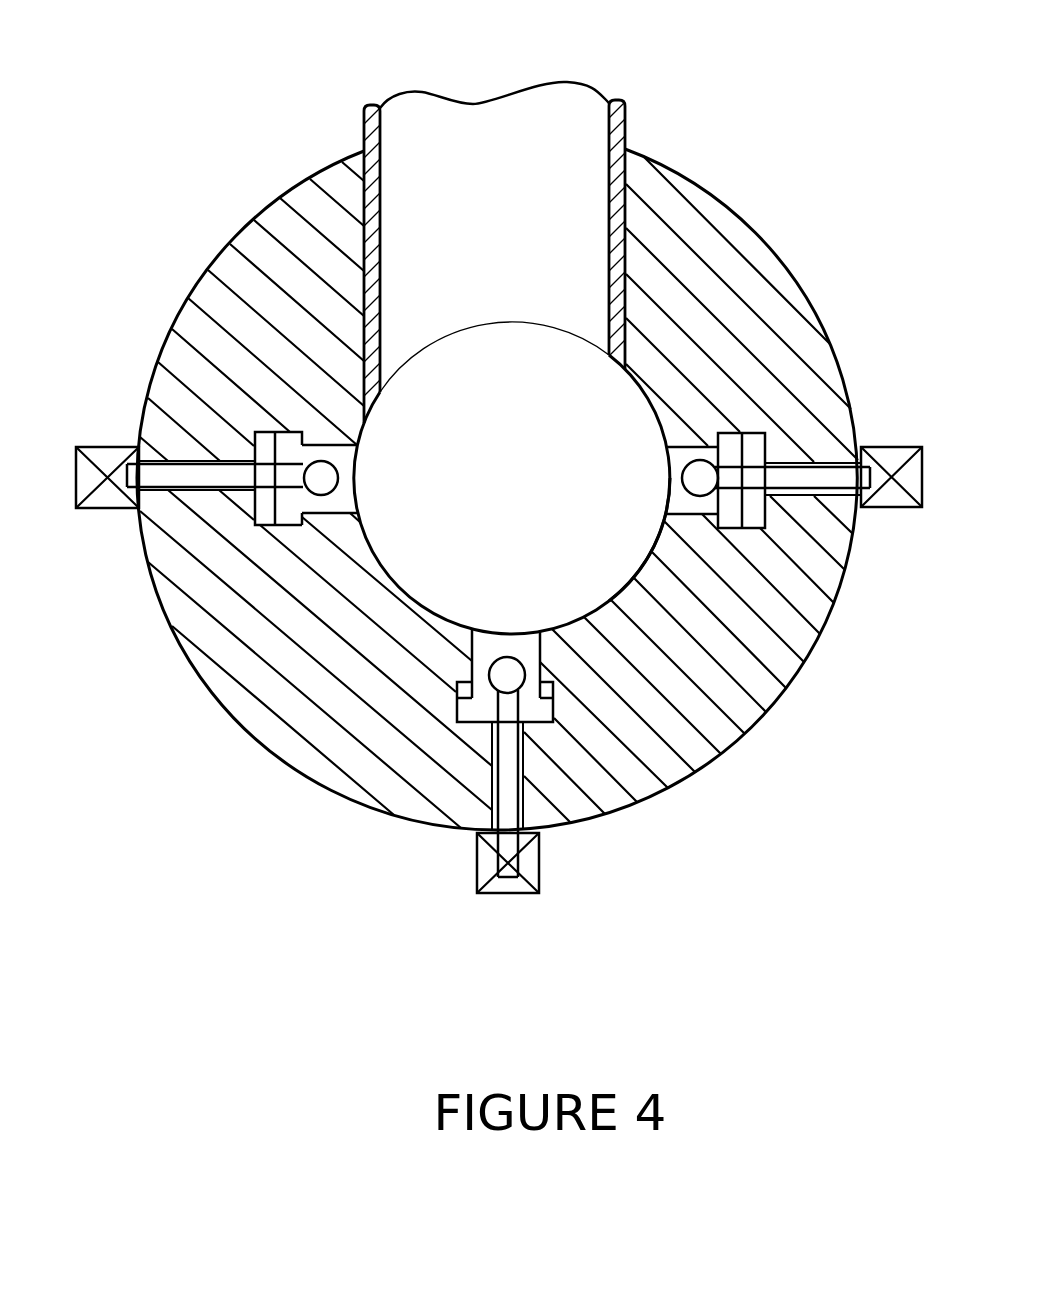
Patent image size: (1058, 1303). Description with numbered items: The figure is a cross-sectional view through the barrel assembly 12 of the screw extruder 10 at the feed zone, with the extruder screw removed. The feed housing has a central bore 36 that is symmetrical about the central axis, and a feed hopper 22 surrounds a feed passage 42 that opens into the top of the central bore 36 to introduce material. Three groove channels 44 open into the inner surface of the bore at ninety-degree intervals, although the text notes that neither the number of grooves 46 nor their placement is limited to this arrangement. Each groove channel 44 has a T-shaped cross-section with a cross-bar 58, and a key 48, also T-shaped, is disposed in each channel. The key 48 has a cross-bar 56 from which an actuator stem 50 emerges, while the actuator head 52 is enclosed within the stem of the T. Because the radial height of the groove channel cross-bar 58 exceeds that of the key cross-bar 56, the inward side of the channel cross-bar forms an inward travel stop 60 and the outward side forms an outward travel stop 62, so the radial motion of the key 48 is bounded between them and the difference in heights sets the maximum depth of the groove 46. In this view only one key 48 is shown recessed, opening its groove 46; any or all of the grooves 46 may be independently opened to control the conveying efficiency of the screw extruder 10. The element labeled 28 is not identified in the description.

The screw extruder 10 is at (747, 187).
The barrel assembly 12 is at (792, 273).
The feed hopper 22 is at (625, 125).
The bolt head 28 is at (85, 470).
The central bore 36 is at (637, 575).
The feed passage 42 is at (488, 318).
The groove channel 44 is at (267, 430).
The groove 46 is at (530, 640).
The key 48 is at (283, 450).
The actuator stem 50 is at (218, 475).
The actuator head 52 is at (315, 485).
The cross-bar of key 56 is at (297, 503).
The cross-bar of groove channel 58 is at (263, 513).
The inward travel stop 60 is at (470, 670).
The outward travel stop 62 is at (470, 722).